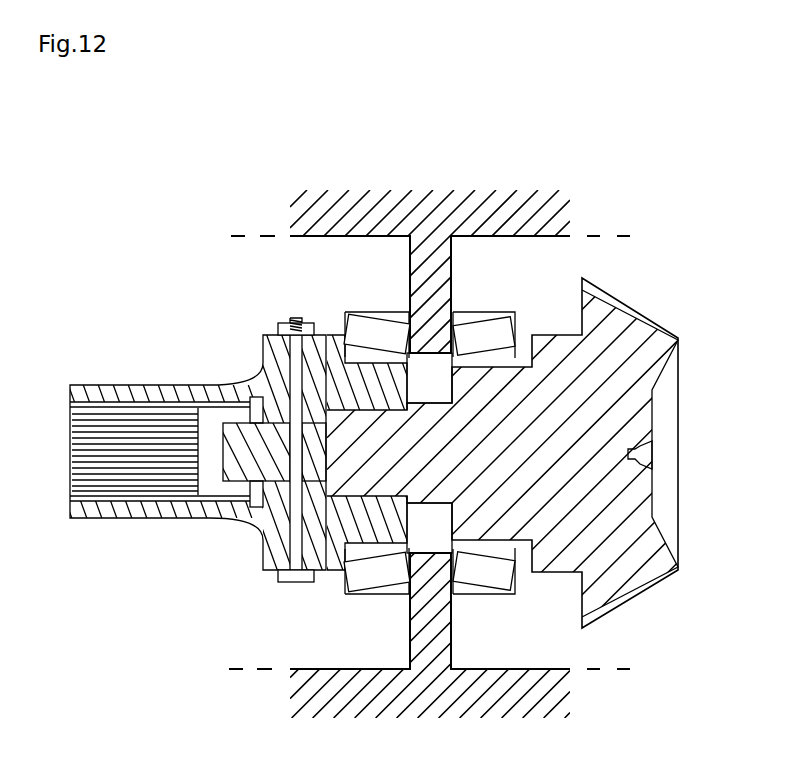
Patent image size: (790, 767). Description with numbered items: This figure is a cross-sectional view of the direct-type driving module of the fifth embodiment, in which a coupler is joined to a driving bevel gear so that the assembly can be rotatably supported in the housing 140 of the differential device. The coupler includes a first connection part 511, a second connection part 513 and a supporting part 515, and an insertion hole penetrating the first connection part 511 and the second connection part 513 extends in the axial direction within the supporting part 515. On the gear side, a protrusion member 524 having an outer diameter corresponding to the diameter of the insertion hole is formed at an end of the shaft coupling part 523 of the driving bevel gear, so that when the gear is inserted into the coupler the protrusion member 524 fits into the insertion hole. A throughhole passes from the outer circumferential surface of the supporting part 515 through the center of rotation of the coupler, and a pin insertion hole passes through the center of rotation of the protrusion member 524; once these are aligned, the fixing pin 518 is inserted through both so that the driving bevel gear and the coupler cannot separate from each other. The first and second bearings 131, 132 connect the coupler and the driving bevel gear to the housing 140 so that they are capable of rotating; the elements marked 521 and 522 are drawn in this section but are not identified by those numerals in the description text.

The housing 140 is at (515, 220).
The first bearing 131 is at (366, 316).
The second bearing 132 is at (462, 318).
The first connection part 511 is at (130, 388).
The second connection part 513 is at (315, 560).
The supporting part 515 is at (277, 333).
The fixing pin 518 is at (297, 390).
The shaft 521 is at (633, 580).
The bearing 522 is at (495, 540).
The shaft coupling part 523 is at (384, 473).
The protrusion member 524 is at (250, 463).